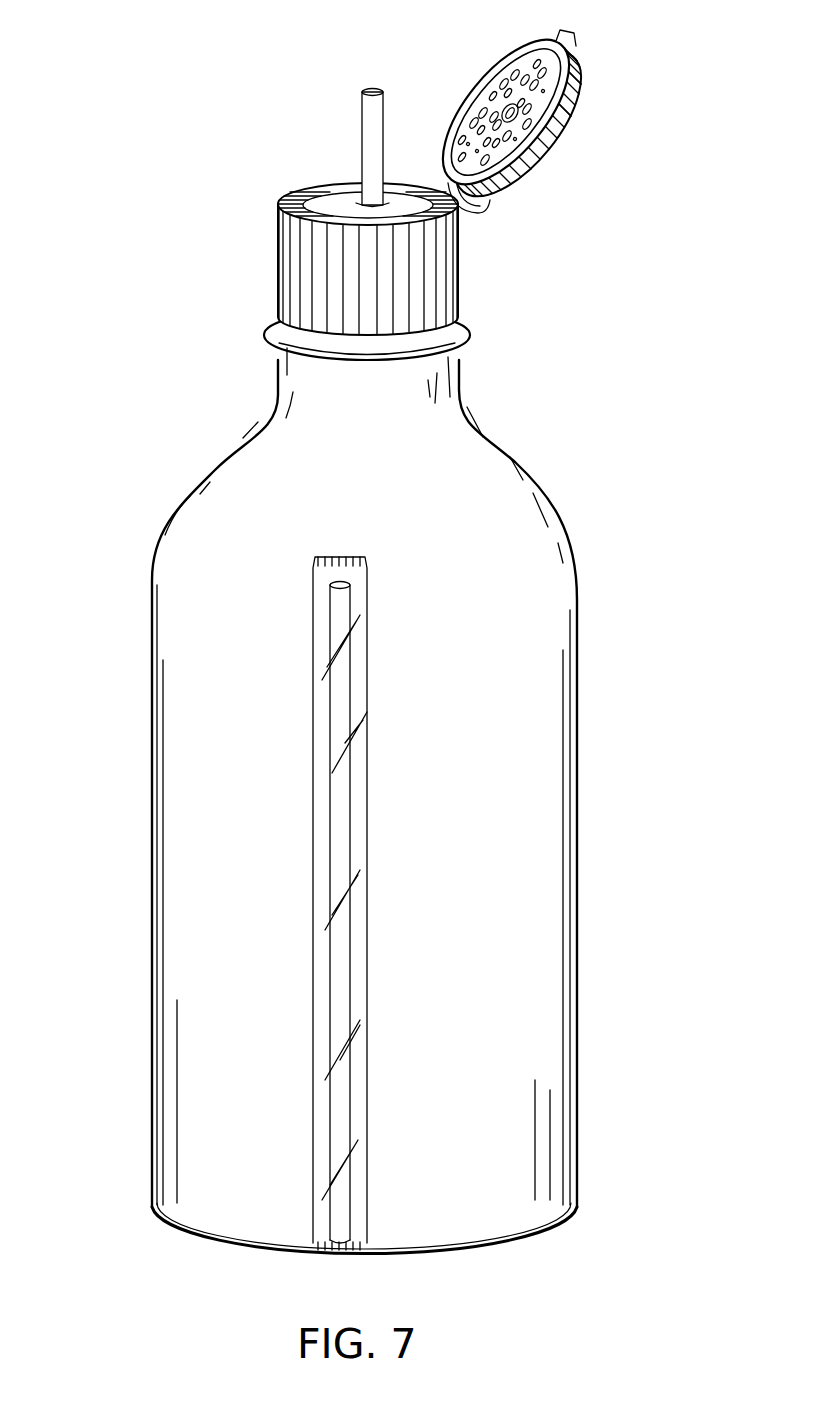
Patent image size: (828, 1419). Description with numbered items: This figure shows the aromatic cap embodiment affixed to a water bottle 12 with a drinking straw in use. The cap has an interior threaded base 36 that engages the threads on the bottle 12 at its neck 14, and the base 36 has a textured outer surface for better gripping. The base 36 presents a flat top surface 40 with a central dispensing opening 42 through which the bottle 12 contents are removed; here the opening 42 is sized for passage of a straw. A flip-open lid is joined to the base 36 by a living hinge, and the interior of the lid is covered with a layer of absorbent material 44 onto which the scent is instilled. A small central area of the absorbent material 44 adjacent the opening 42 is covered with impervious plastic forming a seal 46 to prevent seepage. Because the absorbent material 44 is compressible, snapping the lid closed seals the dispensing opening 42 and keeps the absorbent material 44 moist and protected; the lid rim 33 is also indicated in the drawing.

The water bottle 12 is at (578, 685).
The neck 14 is at (465, 344).
The lid rim 33 is at (560, 136).
The interior threaded base 36 is at (300, 247).
The flat top surface 40 is at (295, 190).
The central dispensing opening 42 is at (357, 200).
The absorbent material 44 is at (504, 127).
The seal 46 is at (503, 111).